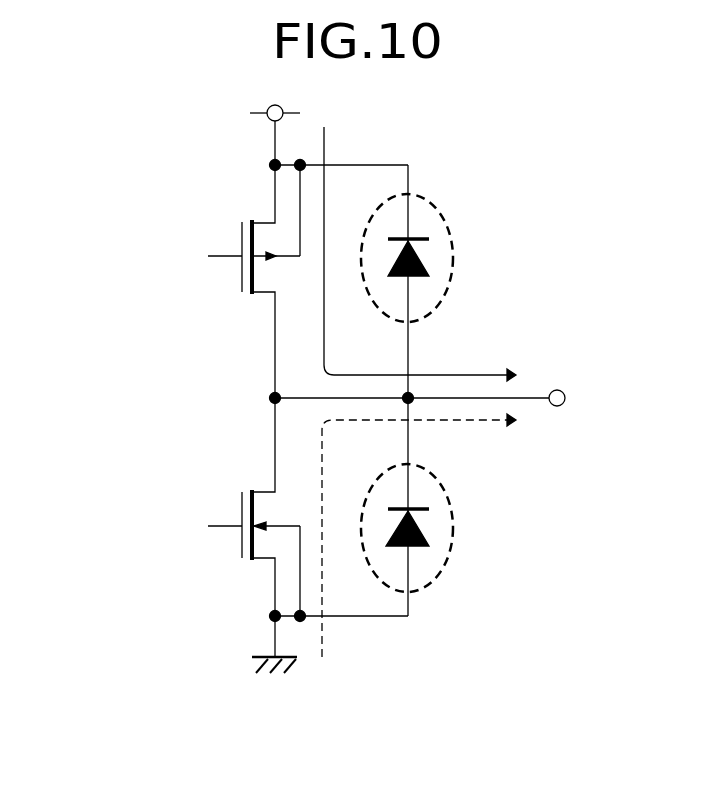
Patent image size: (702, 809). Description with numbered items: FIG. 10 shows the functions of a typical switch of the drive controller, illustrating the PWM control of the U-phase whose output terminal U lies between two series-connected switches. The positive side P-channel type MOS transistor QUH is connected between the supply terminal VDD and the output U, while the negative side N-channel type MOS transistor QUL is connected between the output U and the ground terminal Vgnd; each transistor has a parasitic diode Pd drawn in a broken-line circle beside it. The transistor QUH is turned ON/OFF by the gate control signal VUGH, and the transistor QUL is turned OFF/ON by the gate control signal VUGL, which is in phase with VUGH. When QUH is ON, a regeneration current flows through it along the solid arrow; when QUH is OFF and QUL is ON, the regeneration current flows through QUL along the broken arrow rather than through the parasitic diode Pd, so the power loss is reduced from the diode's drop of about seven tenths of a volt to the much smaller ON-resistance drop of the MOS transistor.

The positive supply voltage terminal VDD is at (239, 123).
The ground potential terminal Vgnd is at (230, 647).
The U-phase U is at (441, 396).
The positive side P-channel type MOS transistor QUH is at (228, 281).
The negative side N-channel type MOS transistor QUL is at (229, 507).
The gate control signal VUGH is at (149, 237).
The gate control signal VUGL is at (149, 507).
The parasitic diode Pd is at (453, 255).